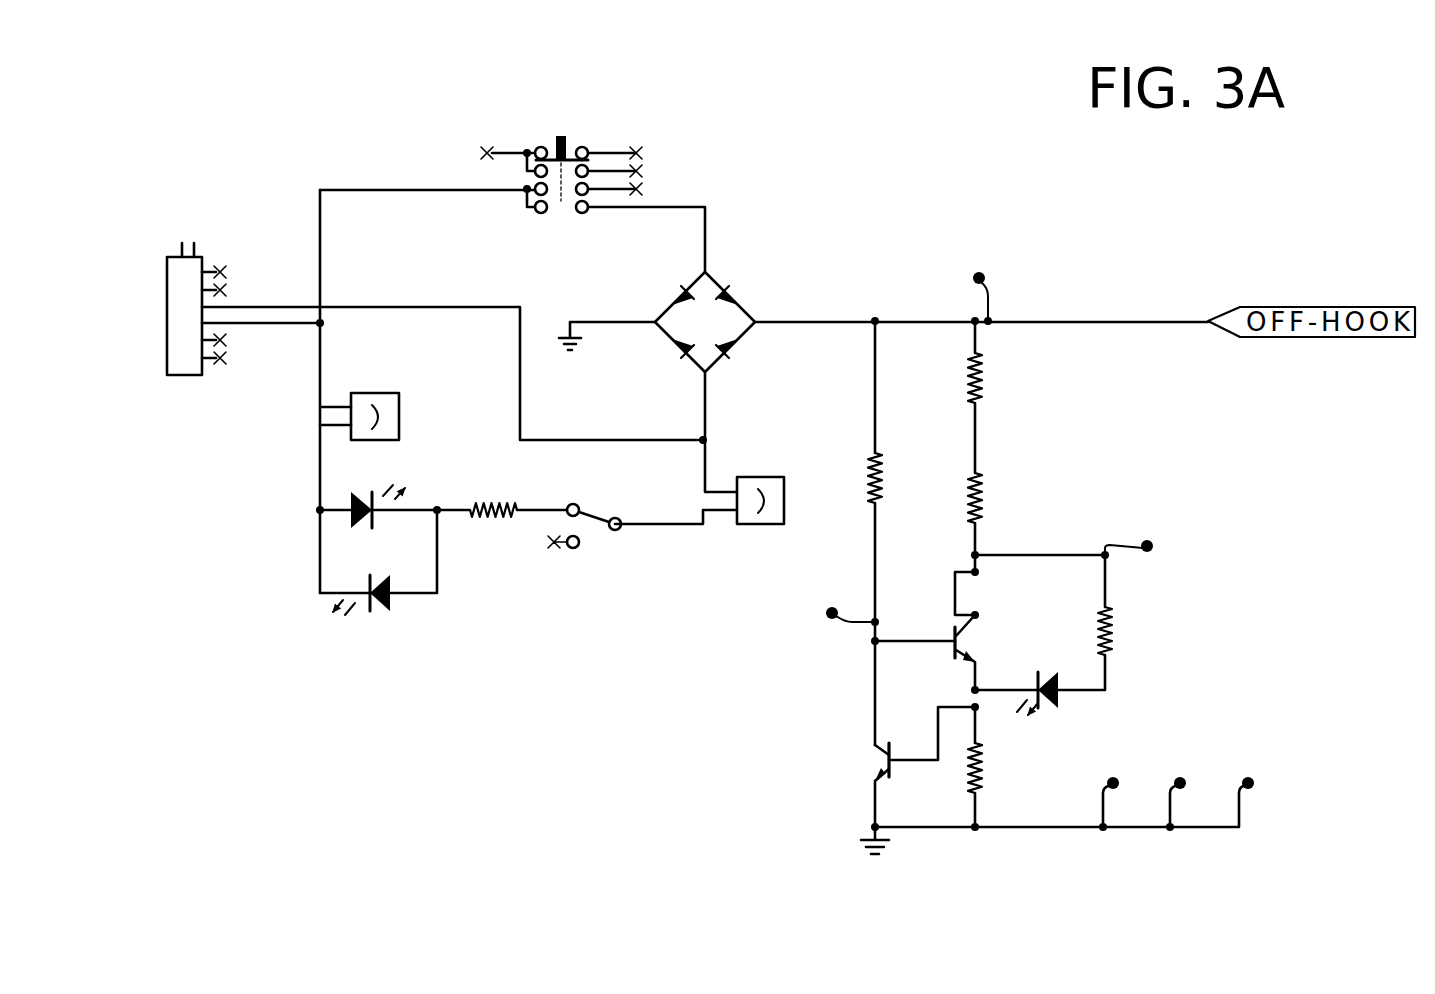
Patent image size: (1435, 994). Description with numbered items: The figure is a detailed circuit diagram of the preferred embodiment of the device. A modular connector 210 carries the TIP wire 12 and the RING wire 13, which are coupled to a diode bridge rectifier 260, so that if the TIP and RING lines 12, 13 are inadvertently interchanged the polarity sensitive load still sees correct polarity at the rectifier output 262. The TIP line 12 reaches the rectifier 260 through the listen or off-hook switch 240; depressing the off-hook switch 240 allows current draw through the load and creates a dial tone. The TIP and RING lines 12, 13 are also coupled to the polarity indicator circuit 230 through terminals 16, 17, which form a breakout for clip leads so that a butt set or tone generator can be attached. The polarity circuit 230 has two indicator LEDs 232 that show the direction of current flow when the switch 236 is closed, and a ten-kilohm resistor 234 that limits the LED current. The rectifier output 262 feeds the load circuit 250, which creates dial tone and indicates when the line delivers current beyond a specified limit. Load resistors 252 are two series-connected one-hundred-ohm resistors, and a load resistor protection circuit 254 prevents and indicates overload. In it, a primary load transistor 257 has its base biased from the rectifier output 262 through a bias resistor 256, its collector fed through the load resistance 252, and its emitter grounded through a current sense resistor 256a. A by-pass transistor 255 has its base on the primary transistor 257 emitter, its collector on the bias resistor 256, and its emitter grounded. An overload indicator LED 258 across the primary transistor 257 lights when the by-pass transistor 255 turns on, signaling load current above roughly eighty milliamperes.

The modular connector 210 is at (167, 272).
The TIP wire 12 is at (255, 322).
The RING wire 13 is at (302, 305).
The off-hook switch 240 is at (558, 128).
The terminal 16 is at (399, 412).
The terminal 17 is at (760, 477).
The diode bridge rectifier 260 is at (720, 275).
The rectifier output 262 is at (808, 320).
The load circuit 250 is at (1268, 498).
The polarity indicator circuit 230 is at (615, 698).
The indicator lights or LEDs 232 is at (373, 522).
The resistor 234 is at (503, 505).
The switch 236 is at (590, 546).
The bias resistor 256 is at (884, 472).
The load resistors 252 is at (978, 380).
The load resistor protection circuit 254 is at (1112, 625).
The primary load transistor 257 is at (948, 650).
The over load indicator LED 258 is at (1060, 698).
The by-pass transistor 255 is at (868, 752).
The current sense resistor 256a is at (982, 775).